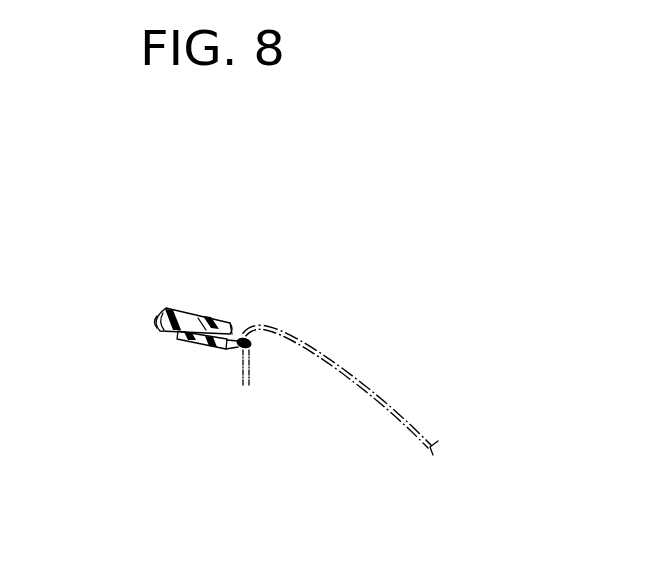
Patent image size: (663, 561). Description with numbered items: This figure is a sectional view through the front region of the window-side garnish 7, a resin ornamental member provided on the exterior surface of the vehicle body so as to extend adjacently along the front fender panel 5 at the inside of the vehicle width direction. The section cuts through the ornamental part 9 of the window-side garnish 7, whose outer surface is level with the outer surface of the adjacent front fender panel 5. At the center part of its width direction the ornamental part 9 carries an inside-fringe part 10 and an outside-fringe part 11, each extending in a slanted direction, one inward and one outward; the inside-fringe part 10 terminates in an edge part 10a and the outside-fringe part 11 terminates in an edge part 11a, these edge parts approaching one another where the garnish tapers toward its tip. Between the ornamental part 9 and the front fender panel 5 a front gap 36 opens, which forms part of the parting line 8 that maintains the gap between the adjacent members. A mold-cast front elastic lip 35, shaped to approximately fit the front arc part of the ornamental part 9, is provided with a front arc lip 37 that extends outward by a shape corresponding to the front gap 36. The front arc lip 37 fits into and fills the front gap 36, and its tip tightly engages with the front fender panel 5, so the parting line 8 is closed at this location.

The front fender panel 5 is at (393, 404).
The window-side garnish 7 is at (196, 297).
The parting line 8 is at (296, 305).
The ornamental part 9 is at (176, 309).
The inside-fringe part 10 is at (158, 318).
The edge part of the inside-fringe part 10a is at (160, 310).
The outside-fringe part 11 is at (223, 322).
The edge part of the outside-fringe part 11a is at (237, 327).
The front elastic lip 35 is at (203, 347).
The front gap 36 is at (243, 328).
The front arc lip 37 is at (226, 352).